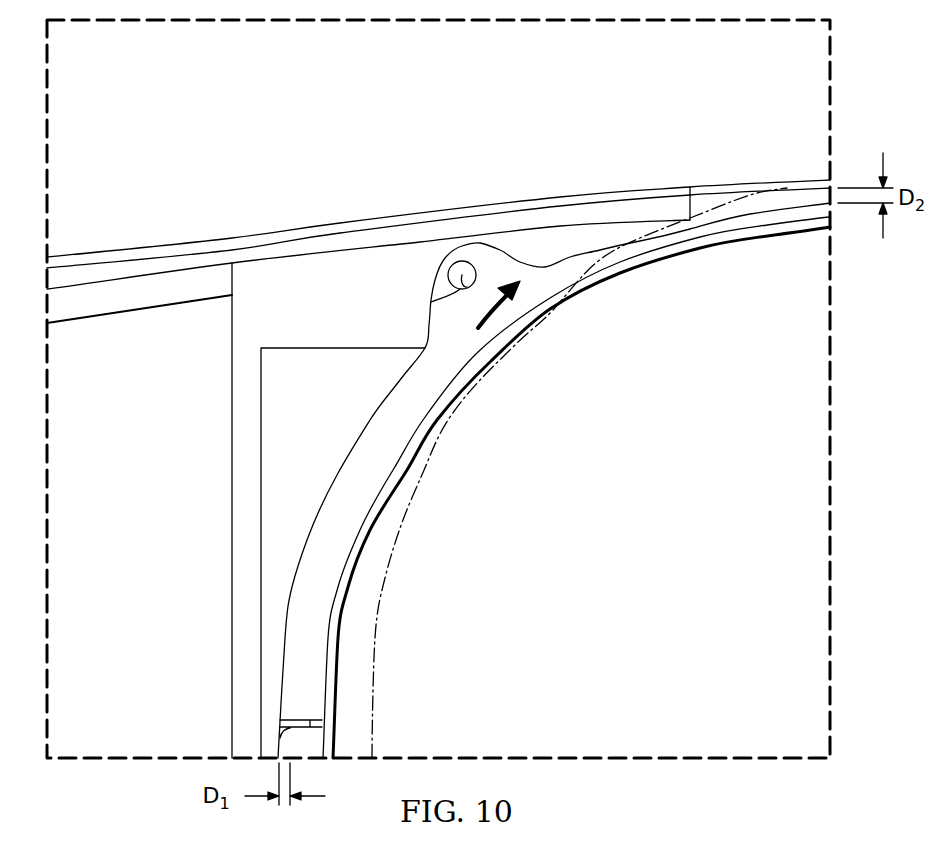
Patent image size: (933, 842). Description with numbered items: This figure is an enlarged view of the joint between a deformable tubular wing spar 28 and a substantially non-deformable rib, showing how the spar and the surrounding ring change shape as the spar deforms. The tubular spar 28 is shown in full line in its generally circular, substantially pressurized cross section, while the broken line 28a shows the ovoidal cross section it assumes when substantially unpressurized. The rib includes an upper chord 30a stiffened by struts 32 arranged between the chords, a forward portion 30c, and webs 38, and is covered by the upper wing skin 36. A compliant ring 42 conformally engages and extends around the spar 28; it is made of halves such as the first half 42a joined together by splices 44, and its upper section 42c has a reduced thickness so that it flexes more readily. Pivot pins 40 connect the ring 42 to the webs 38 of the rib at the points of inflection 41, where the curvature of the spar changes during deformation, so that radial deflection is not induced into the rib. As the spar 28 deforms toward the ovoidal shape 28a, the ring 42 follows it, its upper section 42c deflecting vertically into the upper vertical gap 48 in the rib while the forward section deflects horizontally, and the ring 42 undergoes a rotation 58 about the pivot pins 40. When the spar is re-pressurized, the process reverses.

The tubular wing spar 28 is at (641, 263).
The ovoidal cross sectional shape of the spar 28a is at (380, 641).
The upper chord 30a is at (178, 258).
The forward portion of the rib 30c is at (342, 164).
The strut 32 is at (233, 414).
The upper wing skin 36 is at (266, 226).
The web 38 is at (295, 320).
The pivot pin 40 is at (431, 304).
The point of inflection 41 is at (416, 280).
The ring 42 is at (566, 331).
The first half of the ring 42a is at (371, 421).
The upper section of the ring 42c is at (800, 217).
The splice 44 is at (297, 722).
The upper vertical gap 48 is at (755, 194).
The rotation of the ring 58 is at (488, 322).